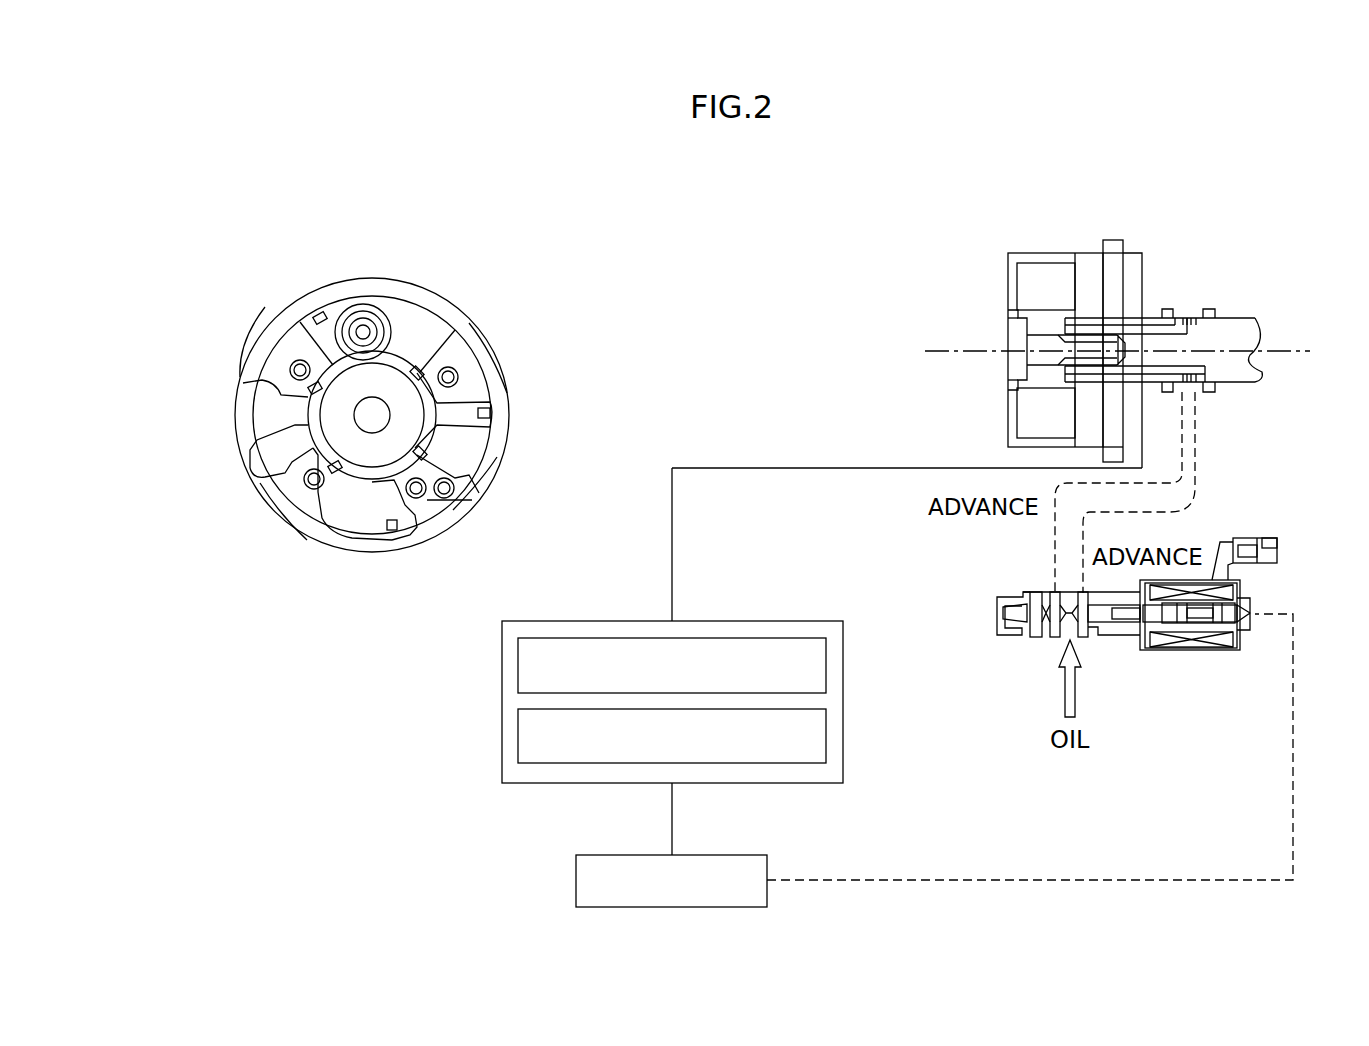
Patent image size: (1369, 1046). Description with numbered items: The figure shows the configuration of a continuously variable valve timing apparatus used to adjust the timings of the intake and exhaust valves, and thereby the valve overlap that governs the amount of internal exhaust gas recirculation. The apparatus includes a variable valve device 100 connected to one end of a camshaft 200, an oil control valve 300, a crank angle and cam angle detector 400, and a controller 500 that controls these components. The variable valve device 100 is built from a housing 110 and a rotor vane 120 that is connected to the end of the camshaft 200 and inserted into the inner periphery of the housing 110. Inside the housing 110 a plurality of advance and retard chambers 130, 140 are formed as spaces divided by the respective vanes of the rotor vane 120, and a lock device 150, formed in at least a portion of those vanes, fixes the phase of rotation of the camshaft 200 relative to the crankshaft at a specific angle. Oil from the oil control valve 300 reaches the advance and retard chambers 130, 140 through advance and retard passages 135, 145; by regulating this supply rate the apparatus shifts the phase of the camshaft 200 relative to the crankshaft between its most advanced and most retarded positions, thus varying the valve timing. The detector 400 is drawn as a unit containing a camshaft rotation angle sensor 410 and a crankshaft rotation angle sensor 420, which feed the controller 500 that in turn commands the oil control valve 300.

The variable valve device 100 is at (318, 292).
The housing 110 is at (293, 485).
The rotor vane 120 is at (395, 500).
The advance chamber 130 is at (270, 405).
The advance passage 135 is at (1053, 547).
The retard chamber 140 is at (292, 474).
The retard passage 145 is at (1197, 470).
The lock device 150 is at (366, 330).
The camshaft 200 is at (1140, 318).
The oil control valve 300 is at (1122, 638).
The crank angle and cam angle detector 400 is at (757, 661).
The camshaft rotation angle sensor 410 is at (517, 667).
The crankshaft rotation angle sensor 420 is at (518, 735).
The controller 500 is at (576, 880).